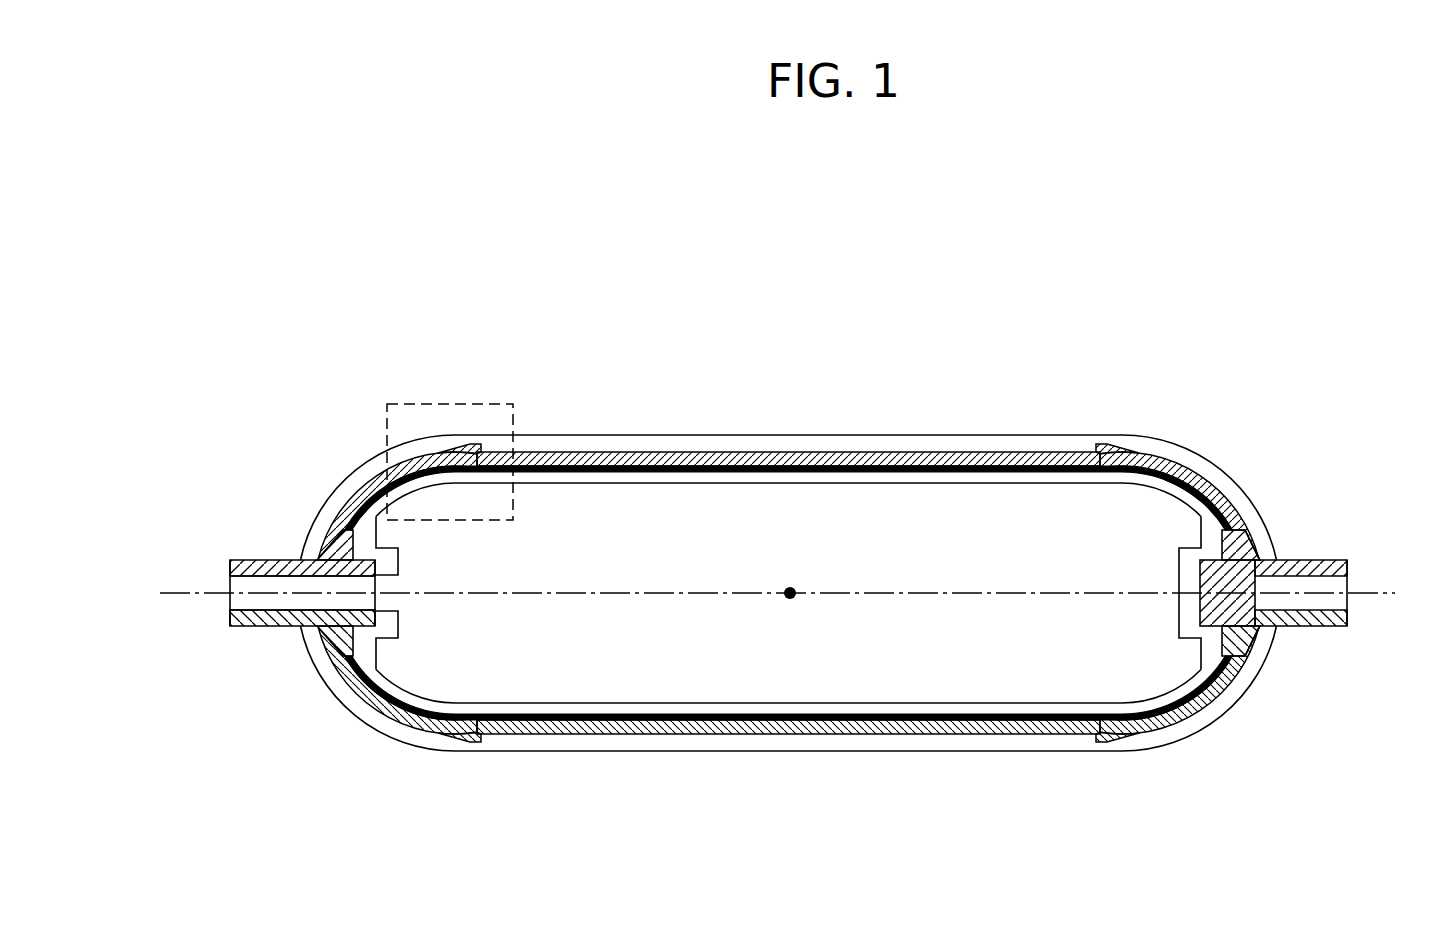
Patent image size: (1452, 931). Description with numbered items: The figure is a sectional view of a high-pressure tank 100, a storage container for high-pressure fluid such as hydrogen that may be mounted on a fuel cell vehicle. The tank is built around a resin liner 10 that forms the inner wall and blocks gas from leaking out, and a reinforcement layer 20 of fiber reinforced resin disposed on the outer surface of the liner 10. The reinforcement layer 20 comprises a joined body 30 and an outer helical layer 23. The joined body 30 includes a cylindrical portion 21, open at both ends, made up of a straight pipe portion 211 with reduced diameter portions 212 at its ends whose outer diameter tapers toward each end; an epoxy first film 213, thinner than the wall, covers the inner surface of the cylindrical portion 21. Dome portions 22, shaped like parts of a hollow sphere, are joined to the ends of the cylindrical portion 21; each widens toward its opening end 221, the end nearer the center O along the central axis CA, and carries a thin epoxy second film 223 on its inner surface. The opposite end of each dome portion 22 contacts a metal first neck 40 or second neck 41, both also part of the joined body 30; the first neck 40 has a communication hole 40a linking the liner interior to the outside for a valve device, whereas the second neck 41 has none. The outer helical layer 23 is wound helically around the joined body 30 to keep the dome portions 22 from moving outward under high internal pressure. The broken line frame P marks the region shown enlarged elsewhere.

The high-pressure tank 100 is at (1260, 272).
The liner 10 is at (598, 477).
The reinforcement layer 20 is at (635, 280).
The cylindrical portion 21 is at (558, 450).
The straight pipe portion 211 is at (780, 714).
The reduced diameter portion 212 is at (458, 701).
The first film 213 is at (1065, 468).
The dome portion 22 is at (355, 488).
The opening end 221 is at (458, 742).
The second film 223 is at (1184, 487).
The outer helical layer 23 is at (665, 437).
The joined body 30 is at (503, 340).
The first neck 40 is at (253, 626).
The communication hole 40a is at (240, 602).
The second neck 41 is at (1292, 627).
The center O is at (790, 593).
The broken line frame P is at (458, 522).
The central axis CA is at (799, 597).